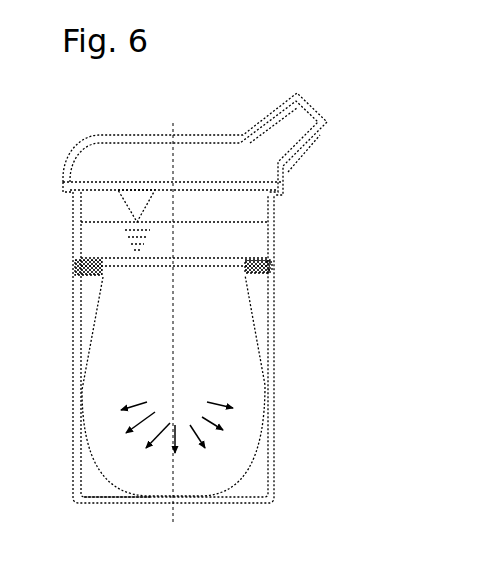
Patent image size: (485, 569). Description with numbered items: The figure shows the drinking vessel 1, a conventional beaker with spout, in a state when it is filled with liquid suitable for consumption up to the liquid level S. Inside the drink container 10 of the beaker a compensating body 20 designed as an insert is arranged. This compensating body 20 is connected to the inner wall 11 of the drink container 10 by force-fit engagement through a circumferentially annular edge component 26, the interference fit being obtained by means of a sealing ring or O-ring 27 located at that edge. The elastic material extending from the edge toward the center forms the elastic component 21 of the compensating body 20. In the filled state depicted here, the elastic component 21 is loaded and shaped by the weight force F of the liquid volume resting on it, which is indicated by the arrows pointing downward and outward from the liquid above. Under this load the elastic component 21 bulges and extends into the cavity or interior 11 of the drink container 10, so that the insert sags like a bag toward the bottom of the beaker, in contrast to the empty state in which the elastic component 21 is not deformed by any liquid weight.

The drinking vessel 1 is at (216, 121).
The compensating body 20 is at (164, 252).
The liquid level S is at (108, 221).
The circumferentially annular edge component 26 is at (259, 257).
The sealing ring or O-ring 27 is at (274, 267).
The drink container 10 is at (276, 329).
The elastic component 21 is at (251, 462).
The inner wall / interior of the drink container 11 is at (101, 479).
The weight force of a liquid volume F is at (177, 423).